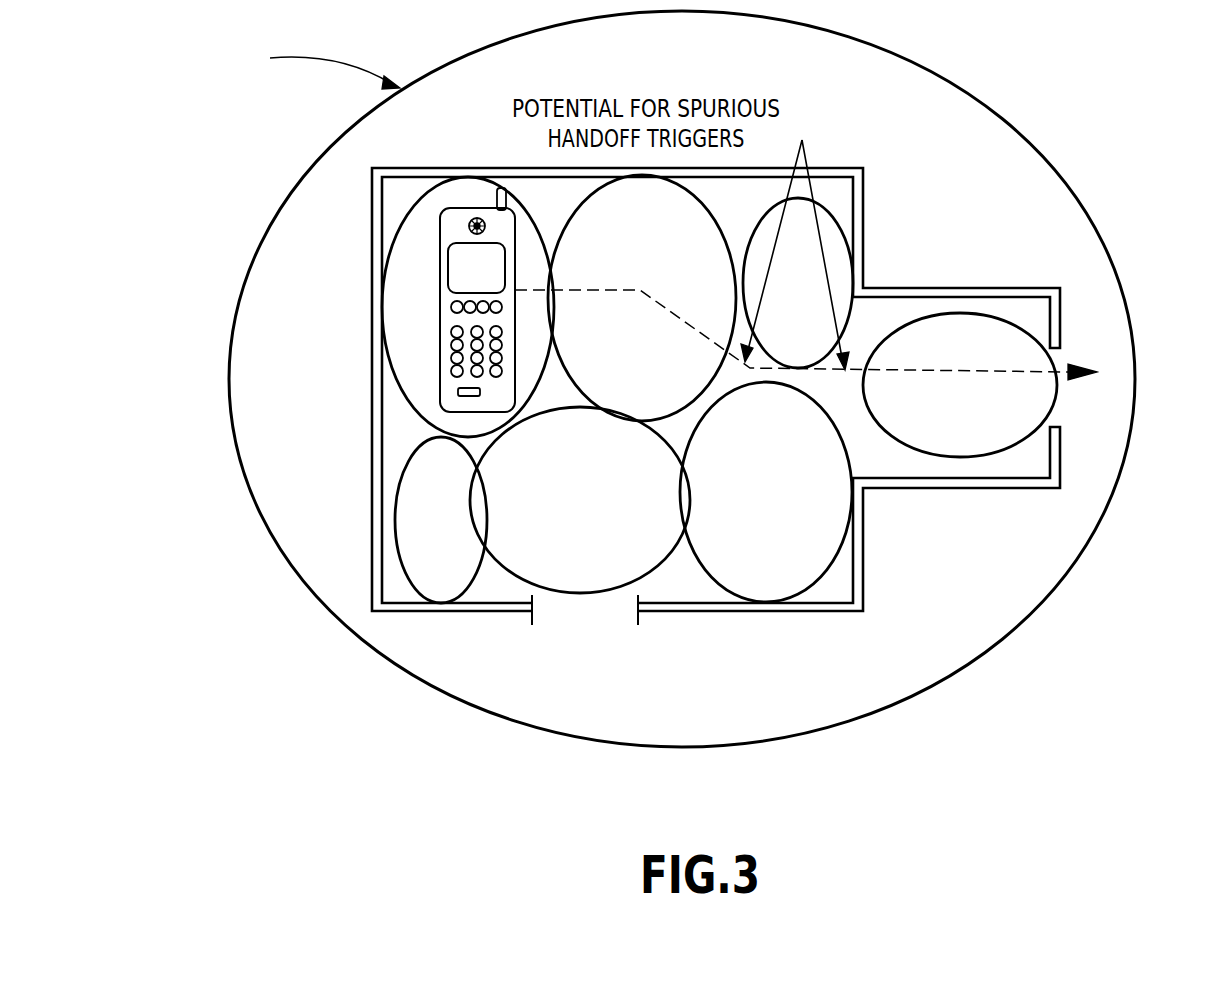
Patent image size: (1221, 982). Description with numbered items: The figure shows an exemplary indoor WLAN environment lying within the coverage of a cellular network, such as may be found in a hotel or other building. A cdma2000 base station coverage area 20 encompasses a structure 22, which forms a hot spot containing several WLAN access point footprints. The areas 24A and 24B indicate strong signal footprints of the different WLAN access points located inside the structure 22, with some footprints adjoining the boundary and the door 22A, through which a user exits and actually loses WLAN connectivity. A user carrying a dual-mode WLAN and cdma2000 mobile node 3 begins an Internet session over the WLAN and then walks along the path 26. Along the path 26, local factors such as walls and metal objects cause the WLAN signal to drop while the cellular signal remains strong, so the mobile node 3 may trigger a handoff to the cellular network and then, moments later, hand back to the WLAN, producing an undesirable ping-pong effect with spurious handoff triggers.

The mobile node 3 is at (440, 316).
The base station coverage area 20 is at (265, 230).
The structure 22 is at (437, 167).
The door 22A is at (1068, 346).
The WLAN access point coverage area 24A is at (390, 378).
The WLAN access point coverage area 24B is at (582, 594).
The path 26 is at (596, 290).